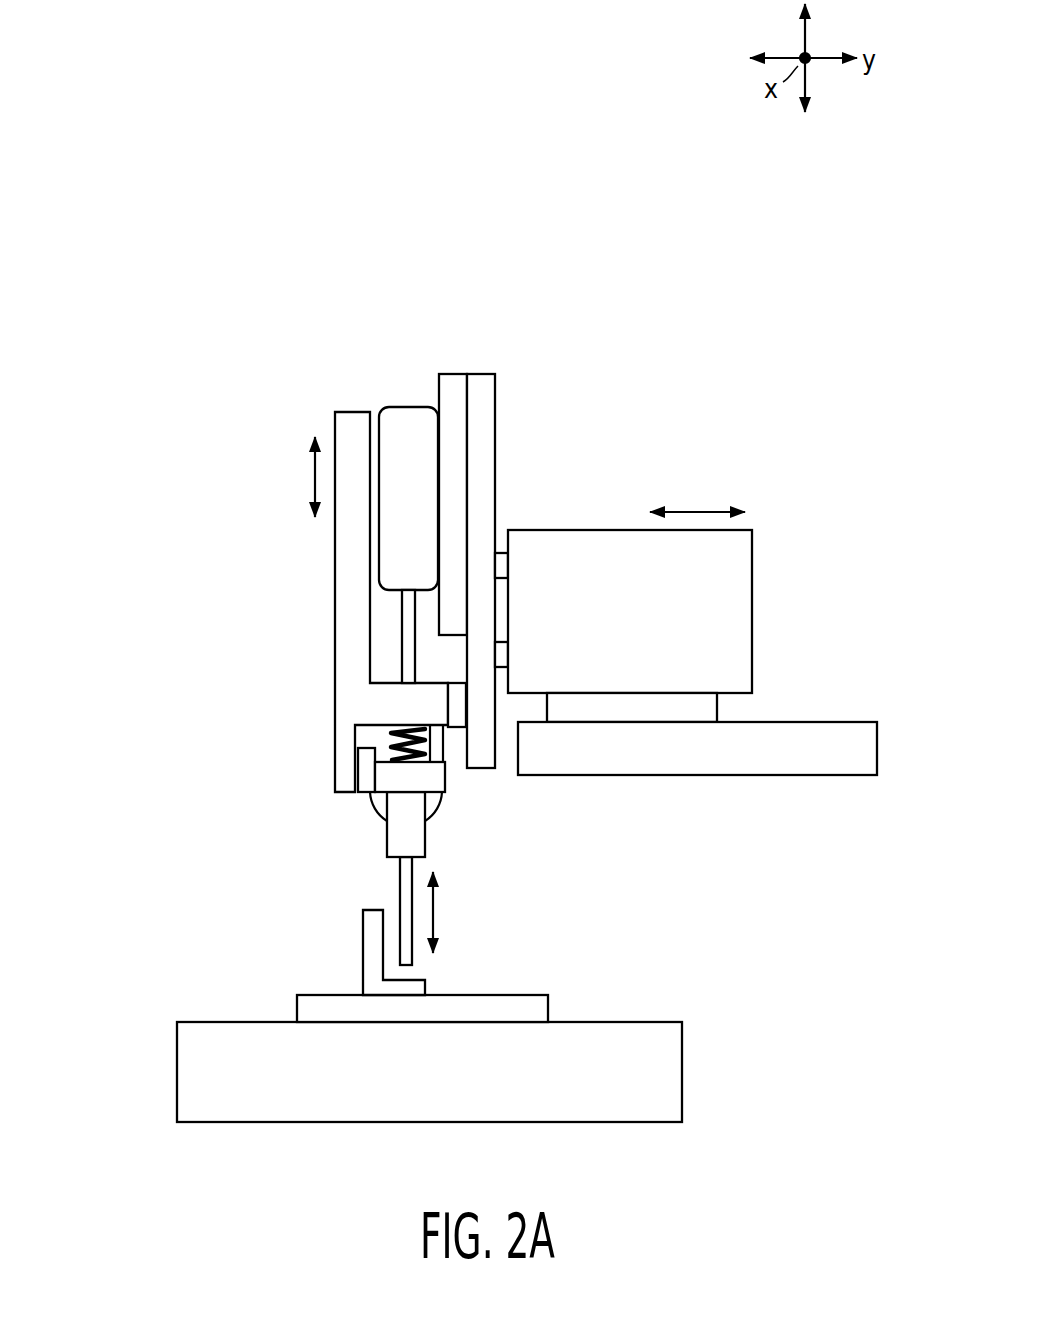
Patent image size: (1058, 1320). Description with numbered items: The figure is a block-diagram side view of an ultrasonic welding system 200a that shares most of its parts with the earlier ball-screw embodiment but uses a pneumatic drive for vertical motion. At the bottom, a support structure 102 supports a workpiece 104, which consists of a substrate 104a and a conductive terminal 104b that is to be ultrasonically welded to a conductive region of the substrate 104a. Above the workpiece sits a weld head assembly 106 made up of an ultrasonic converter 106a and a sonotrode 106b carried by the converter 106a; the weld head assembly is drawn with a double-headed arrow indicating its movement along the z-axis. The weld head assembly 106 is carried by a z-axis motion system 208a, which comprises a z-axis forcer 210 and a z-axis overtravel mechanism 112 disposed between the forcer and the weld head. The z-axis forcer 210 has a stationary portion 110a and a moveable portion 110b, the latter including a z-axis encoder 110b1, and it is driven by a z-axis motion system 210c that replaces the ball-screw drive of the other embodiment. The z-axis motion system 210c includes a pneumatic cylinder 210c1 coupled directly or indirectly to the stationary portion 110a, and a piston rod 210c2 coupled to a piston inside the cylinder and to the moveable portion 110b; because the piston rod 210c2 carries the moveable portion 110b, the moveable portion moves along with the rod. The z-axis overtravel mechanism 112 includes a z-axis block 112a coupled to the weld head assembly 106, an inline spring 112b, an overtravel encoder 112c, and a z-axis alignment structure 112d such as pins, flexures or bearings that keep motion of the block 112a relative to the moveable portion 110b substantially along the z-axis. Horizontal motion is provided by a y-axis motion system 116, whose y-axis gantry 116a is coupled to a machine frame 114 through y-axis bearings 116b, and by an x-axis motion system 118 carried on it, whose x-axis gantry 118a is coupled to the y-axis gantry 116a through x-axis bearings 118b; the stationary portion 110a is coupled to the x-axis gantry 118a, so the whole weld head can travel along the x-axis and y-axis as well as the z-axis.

The support structure 102 is at (682, 1073).
The workpiece 104 is at (417, 966).
The substrate 104a is at (548, 1000).
The conductive terminal 104b is at (363, 947).
The weld head assembly 106 is at (380, 878).
The ultrasonic converter 106a is at (398, 840).
The sonotrode 106b is at (400, 897).
The stationary portion 110a is at (468, 430).
The moveable portion 110b is at (335, 573).
The z-axis encoder 110b1 is at (457, 708).
The z-axis overtravel mechanism 112 is at (312, 789).
The z-axis block 112a is at (411, 780).
The inline spring 112b is at (374, 740).
The overtravel encoder 112c is at (365, 775).
The z-axis alignment structure 112d is at (436, 752).
The machine frame 114 is at (812, 778).
The y-axis motion system 116 is at (698, 602).
The y-axis gantry 116a is at (752, 612).
The y-axis bearings 116b is at (720, 705).
The x-axis motion system 118 is at (562, 564).
The x-axis gantry 118a is at (495, 383).
The x-axis bearings 118b is at (505, 655).
The ultrasonic welding system 200a is at (654, 281).
The z-axis motion system 208a is at (281, 347).
The z-axis forcer 210 is at (299, 470).
The z-axis motion system 210c is at (299, 470).
The pneumatic cylinder 210c1 is at (385, 470).
The piston rod 210c2 is at (408, 627).